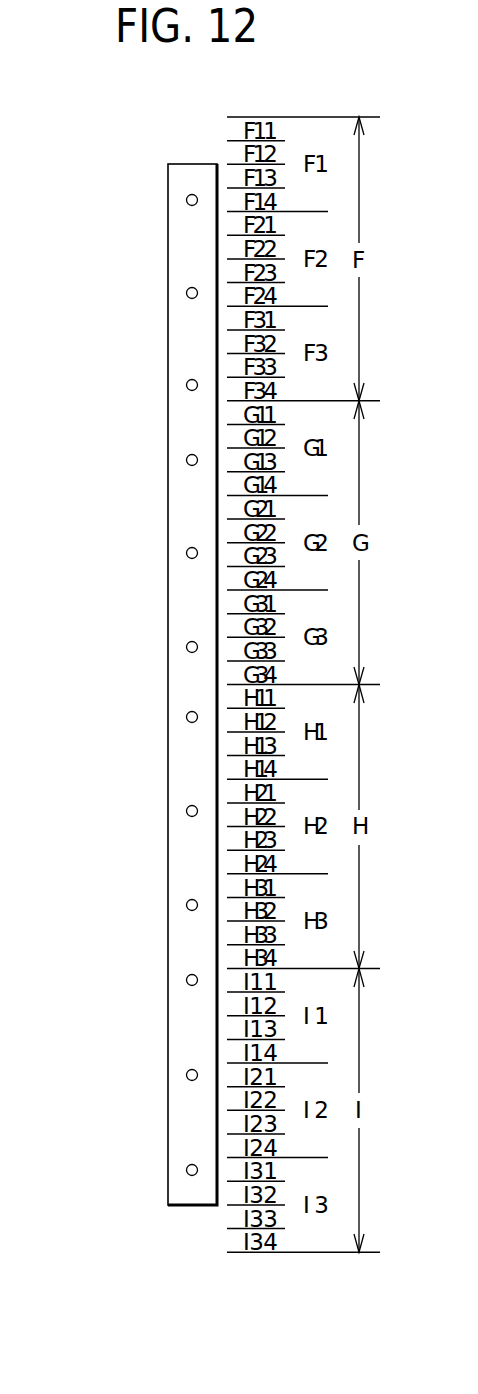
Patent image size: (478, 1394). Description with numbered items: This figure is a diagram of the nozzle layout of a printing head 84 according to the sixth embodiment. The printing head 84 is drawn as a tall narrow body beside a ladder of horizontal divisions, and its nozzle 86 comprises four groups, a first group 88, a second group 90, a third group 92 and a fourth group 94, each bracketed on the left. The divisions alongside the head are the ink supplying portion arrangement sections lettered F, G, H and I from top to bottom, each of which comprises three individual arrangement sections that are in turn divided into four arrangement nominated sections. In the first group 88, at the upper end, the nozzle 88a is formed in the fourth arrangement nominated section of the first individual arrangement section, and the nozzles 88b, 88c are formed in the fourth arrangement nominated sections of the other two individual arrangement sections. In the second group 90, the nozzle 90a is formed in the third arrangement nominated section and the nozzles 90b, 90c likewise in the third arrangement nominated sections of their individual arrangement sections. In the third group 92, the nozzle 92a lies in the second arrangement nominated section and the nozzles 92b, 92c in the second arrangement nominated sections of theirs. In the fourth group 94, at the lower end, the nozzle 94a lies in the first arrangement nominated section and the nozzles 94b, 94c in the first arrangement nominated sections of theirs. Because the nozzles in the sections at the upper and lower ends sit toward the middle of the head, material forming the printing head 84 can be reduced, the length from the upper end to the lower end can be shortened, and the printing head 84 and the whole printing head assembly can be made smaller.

The printing head 84 is at (187, 151).
The nozzle 86 is at (52, 1078).
The first group 88 is at (102, 192).
The nozzle 88a is at (186, 200).
The nozzle 88b is at (186, 293).
The nozzle 88c is at (186, 385).
The second group 90 is at (102, 452).
The nozzle 90a is at (186, 460).
The nozzle 90b is at (186, 553).
The nozzle 90c is at (186, 647).
The third group 92 is at (102, 709).
The nozzle 92a is at (186, 717).
The nozzle 92b is at (186, 811).
The nozzle 92c is at (186, 905).
The fourth group 94 is at (102, 972).
The nozzle 94a is at (186, 980).
The nozzle 94b is at (186, 1075).
The nozzle 94c is at (186, 1170).